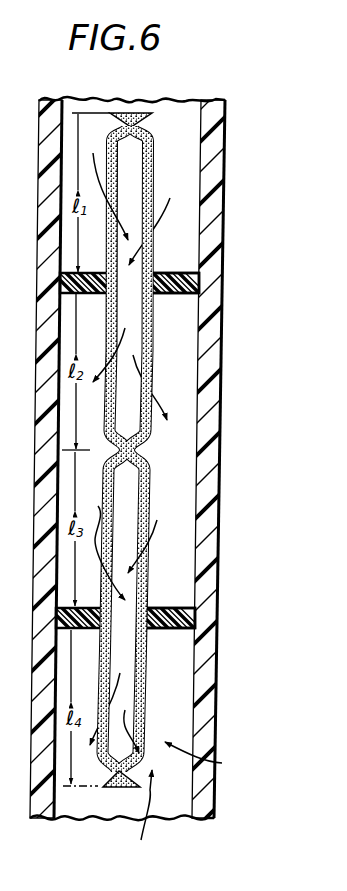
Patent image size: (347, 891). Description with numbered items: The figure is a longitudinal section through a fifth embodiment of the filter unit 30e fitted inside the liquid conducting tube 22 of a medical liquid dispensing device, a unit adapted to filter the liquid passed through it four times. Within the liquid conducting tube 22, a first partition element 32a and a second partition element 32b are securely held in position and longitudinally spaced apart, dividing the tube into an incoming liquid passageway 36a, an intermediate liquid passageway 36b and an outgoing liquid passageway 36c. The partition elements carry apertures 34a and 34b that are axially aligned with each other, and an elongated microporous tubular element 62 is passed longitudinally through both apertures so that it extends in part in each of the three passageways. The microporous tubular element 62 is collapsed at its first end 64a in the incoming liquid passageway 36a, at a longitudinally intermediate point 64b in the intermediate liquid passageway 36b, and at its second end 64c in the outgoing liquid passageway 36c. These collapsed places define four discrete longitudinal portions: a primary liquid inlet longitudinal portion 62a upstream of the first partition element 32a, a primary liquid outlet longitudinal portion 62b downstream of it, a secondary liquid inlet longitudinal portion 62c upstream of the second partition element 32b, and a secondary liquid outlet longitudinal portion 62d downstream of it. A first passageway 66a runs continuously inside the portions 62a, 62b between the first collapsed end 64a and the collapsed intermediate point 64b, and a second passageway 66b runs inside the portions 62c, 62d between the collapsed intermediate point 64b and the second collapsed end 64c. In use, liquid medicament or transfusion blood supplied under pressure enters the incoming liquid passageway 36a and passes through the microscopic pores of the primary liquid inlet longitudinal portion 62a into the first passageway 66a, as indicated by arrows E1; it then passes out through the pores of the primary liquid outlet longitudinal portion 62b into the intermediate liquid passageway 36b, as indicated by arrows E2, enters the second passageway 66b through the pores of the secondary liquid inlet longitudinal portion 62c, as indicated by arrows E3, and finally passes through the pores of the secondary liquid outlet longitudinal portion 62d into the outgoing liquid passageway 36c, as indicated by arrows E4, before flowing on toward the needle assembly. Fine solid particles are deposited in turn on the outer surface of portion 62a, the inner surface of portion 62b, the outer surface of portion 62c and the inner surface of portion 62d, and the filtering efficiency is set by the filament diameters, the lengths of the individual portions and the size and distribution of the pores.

The liquid conducting tube 22 is at (227, 133).
The filter unit 30e is at (213, 759).
The first partition element 32a is at (182, 296).
The second partition element 32b is at (148, 630).
The aperture 34a is at (150, 265).
The aperture 34b is at (147, 608).
The incoming liquid passageway 36a is at (173, 113).
The intermediate liquid passageway 36b is at (185, 488).
The outgoing liquid passageway 36c is at (180, 690).
The microporous tubular element 62 is at (156, 462).
The primary liquid inlet longitudinal portion 62a is at (155, 131).
The primary liquid outlet longitudinal portion 62b is at (152, 362).
The secondary liquid inlet longitudinal portion 62c is at (147, 557).
The secondary liquid outlet longitudinal portion 62d is at (147, 693).
The first collapsed end 64a is at (113, 126).
The collapsed intermediate point 64b is at (137, 451).
The second collapsed end 64c is at (108, 777).
The first passageway 66a is at (132, 189).
The second passageway 66b is at (128, 516).
The arrows E1 is at (62, 185).
The arrows E2 is at (101, 365).
The arrows E3 is at (102, 547).
The arrows E4 is at (152, 817).